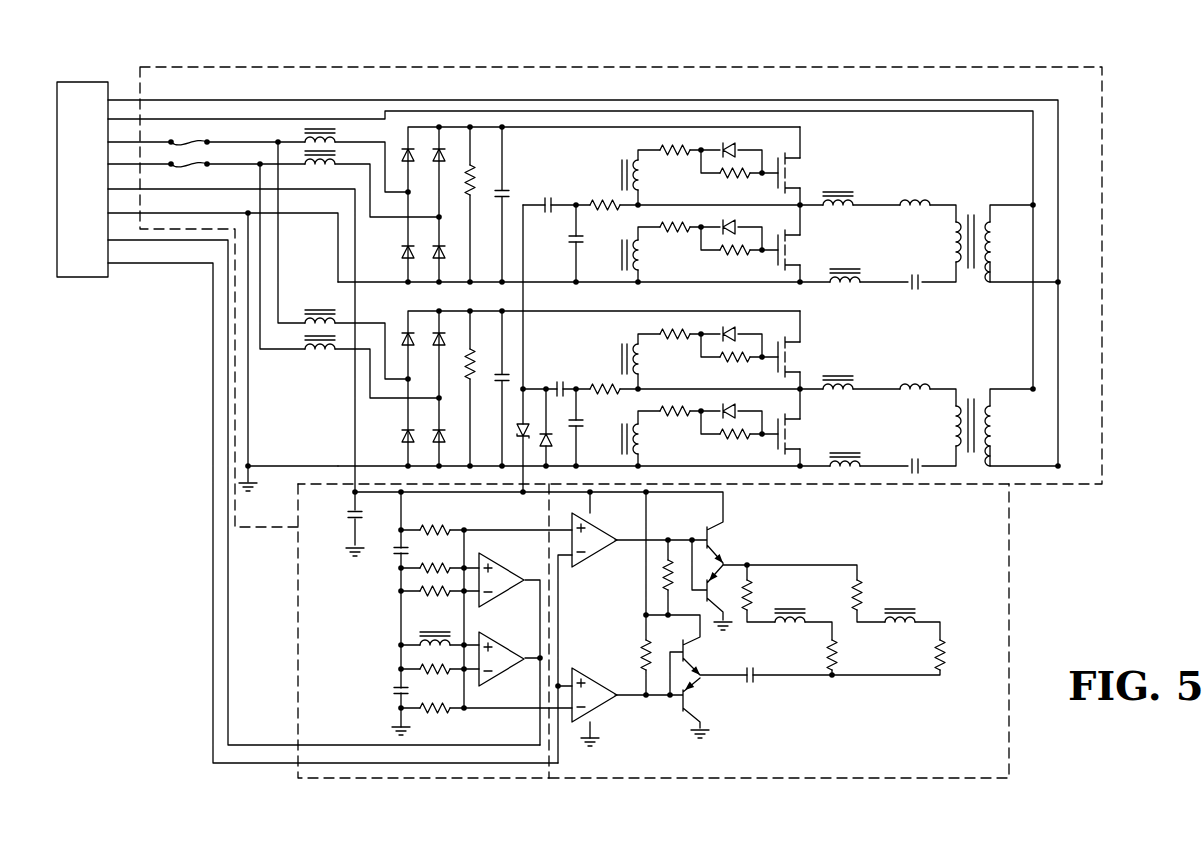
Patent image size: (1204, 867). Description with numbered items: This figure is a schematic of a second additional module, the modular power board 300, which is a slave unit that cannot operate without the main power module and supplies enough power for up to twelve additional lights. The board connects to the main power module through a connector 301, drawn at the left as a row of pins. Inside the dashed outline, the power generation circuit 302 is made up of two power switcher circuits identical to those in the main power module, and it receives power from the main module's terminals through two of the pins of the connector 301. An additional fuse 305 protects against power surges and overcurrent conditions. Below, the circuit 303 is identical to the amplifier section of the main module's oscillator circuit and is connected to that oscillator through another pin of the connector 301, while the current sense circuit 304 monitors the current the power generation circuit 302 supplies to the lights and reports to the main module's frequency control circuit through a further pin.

The modular power board 300 is at (1076, 501).
The connector 301 is at (72, 82).
The power generation circuit 302 is at (1103, 166).
The amplifier circuit 303 is at (1010, 596).
The current sense circuit 304 is at (322, 779).
The fuse 305 is at (196, 172).